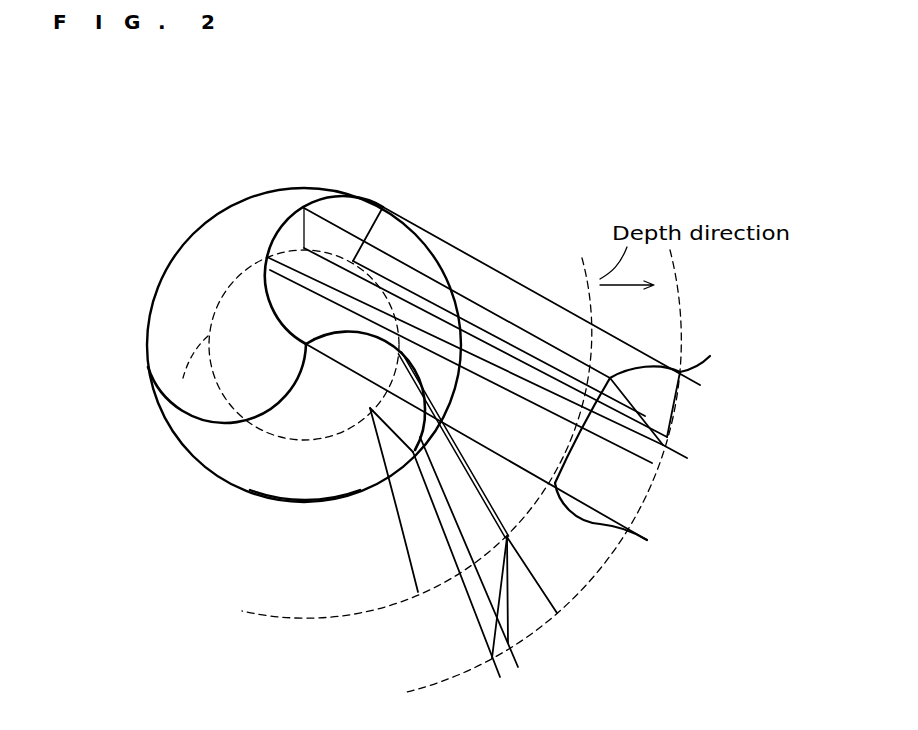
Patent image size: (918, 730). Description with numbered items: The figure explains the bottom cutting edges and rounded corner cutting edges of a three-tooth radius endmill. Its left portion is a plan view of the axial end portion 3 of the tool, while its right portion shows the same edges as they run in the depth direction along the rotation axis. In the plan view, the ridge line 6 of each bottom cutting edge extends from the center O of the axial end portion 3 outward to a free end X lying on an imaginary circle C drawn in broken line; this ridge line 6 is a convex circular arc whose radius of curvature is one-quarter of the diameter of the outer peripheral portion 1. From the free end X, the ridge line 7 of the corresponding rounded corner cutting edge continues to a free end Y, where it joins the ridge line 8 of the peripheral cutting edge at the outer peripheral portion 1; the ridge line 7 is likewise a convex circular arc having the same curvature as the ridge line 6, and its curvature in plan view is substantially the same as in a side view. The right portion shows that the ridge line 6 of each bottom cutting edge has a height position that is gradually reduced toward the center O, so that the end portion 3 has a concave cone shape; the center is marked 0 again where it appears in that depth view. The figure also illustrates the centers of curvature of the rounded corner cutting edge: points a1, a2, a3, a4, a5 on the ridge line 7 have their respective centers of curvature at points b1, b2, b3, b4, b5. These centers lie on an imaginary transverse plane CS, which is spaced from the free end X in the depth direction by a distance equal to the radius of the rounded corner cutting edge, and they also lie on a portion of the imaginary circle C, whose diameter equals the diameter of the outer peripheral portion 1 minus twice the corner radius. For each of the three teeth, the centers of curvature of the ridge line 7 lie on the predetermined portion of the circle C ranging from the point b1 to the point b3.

The outer peripheral portion 1 is at (192, 232).
The axial end portion 3 is at (230, 305).
The ridge line of bottom cutting edge 6 is at (278, 320).
The ridge line of rounded corner cutting edge 7 is at (312, 205).
The ridge line of peripheral cutting edge 8 is at (300, 502).
The center of axial end portion O is at (462, 440).
The origin point 0 is at (437, 588).
The free end X is at (267, 257).
The free end Y is at (383, 207).
The imaginary circle C is at (189, 369).
The imaginary transverse plane CS is at (610, 557).
The point on ridge line of rounded corner cutting edge a1 is at (267, 257).
The point on ridge line of rounded corner cutting edge a2 is at (304, 208).
The point on ridge line of rounded corner cutting edge a3 is at (383, 207).
The point on ridge line of rounded corner cutting edge a4 is at (400, 353).
The point on ridge line of rounded corner cutting edge a5 is at (415, 450).
The center of curvature point b1 is at (270, 270).
The center of curvature point b2 is at (267, 257).
The center of curvature point b3 is at (353, 261).
The center of curvature point b4 is at (439, 420).
The center of curvature point b5 is at (370, 408).